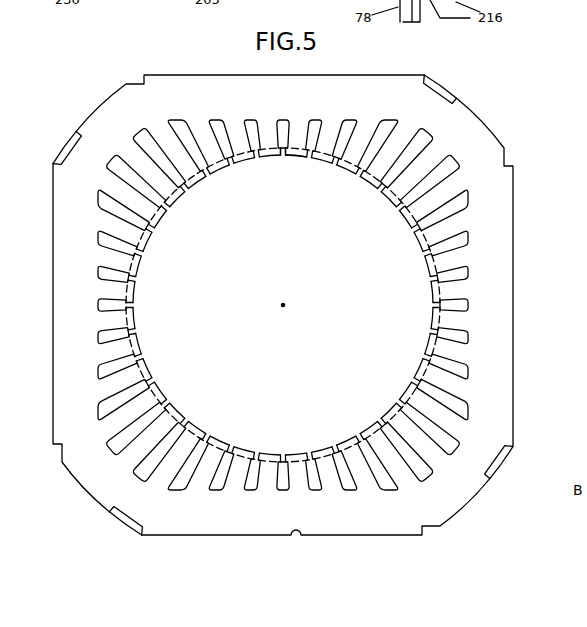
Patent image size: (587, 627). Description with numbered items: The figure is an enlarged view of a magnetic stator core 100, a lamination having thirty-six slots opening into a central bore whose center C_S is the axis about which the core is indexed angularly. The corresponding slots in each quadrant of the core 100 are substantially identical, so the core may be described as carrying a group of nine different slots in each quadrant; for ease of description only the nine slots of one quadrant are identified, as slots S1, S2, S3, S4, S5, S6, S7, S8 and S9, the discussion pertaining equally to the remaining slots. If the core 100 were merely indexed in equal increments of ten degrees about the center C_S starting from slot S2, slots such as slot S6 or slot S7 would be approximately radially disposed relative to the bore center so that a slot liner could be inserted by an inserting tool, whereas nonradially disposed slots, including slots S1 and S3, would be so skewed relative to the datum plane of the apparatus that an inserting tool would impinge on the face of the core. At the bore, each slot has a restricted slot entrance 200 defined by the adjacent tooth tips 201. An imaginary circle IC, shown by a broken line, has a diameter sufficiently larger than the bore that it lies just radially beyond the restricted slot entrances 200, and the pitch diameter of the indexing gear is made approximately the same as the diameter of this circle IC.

The stator core 100 is at (175, 82).
The slot S1 is at (257, 120).
The slot S2 is at (284, 118).
The slot S3 is at (312, 120).
The slot S4 is at (347, 118).
The slot S5 is at (385, 120).
The slot S6 is at (420, 128).
The slot S7 is at (452, 167).
The slot S8 is at (467, 197).
The slot S9 is at (470, 242).
The restricted slot entrance 200 is at (307, 158).
The tooth tip 201 is at (285, 153).
The imaginary circle IC is at (133, 315).
The center of the bore CS is at (283, 305).